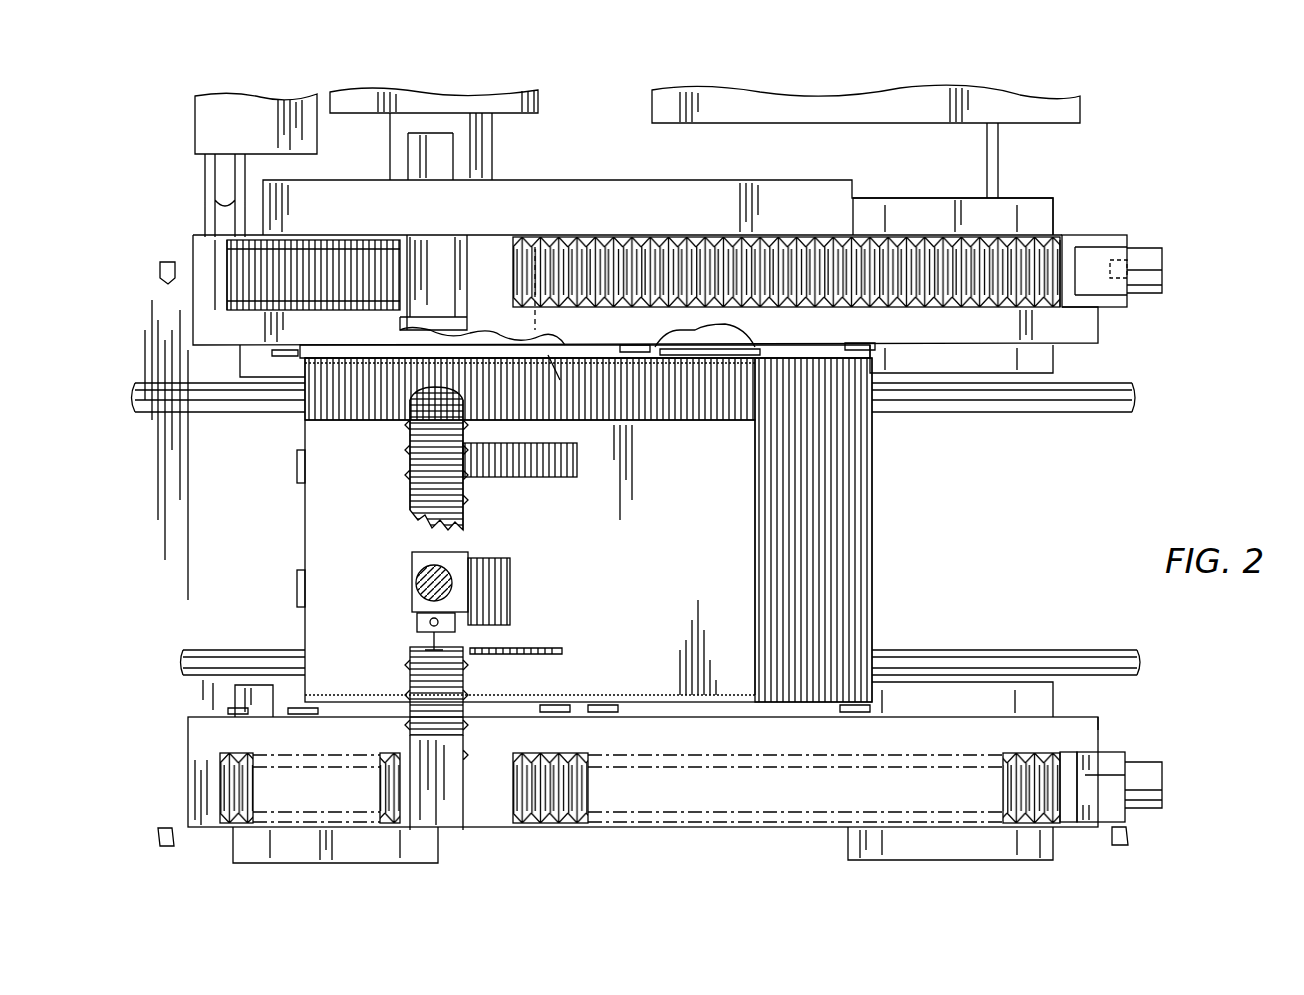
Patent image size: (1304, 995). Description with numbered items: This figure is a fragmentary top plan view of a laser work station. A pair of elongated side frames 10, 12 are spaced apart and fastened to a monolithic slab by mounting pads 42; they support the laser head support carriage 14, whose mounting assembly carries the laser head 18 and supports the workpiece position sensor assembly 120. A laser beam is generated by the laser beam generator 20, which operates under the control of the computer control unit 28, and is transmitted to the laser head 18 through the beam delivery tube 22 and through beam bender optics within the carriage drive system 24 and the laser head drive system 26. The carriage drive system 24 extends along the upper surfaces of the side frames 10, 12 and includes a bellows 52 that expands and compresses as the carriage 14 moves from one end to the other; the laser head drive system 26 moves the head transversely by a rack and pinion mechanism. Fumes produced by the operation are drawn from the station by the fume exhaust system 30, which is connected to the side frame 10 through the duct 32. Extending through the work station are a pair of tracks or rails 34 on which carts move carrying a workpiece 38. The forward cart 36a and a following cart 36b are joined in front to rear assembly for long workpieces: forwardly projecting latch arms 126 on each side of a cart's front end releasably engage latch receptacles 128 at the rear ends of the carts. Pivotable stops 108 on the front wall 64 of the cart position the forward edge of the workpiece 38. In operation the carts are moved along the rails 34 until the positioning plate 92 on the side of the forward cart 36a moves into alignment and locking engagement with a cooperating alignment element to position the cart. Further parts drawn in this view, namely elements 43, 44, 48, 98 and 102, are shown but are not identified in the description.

The side frame 10 is at (925, 232).
The side frame 12 is at (1098, 740).
The laser head support carriage 14 is at (495, 830).
The laser head 18 is at (410, 580).
The laser beam generator 20 is at (195, 125).
The beam delivery tube 22 is at (210, 196).
The carriage drive system 24 is at (570, 240).
The laser head drive system 26 is at (440, 495).
The computer control unit 28 is at (842, 105).
The fume exhaust system 30 is at (548, 99).
The duct 32 is at (496, 172).
The tracks or rails 34 is at (1095, 382).
The forward cart 36a is at (297, 428).
The cart or carrier 36b is at (872, 590).
The workpiece 38 is at (608, 597).
The mounting pads 42 is at (955, 690).
The rail end 43 is at (1108, 704).
The end block 44 is at (1045, 205).
The cam 48 is at (690, 340).
The bellows 52 is at (900, 265).
The front wall 64 is at (300, 384).
The positioning plate 92 is at (548, 355).
The pawl 98 is at (530, 330).
The pivot axis 102 is at (533, 245).
The pivotable stops 108 is at (297, 590).
The workpiece position sensor assembly 120 is at (413, 630).
The latch arms 126 is at (265, 352).
The latch receptacles 128 is at (862, 350).